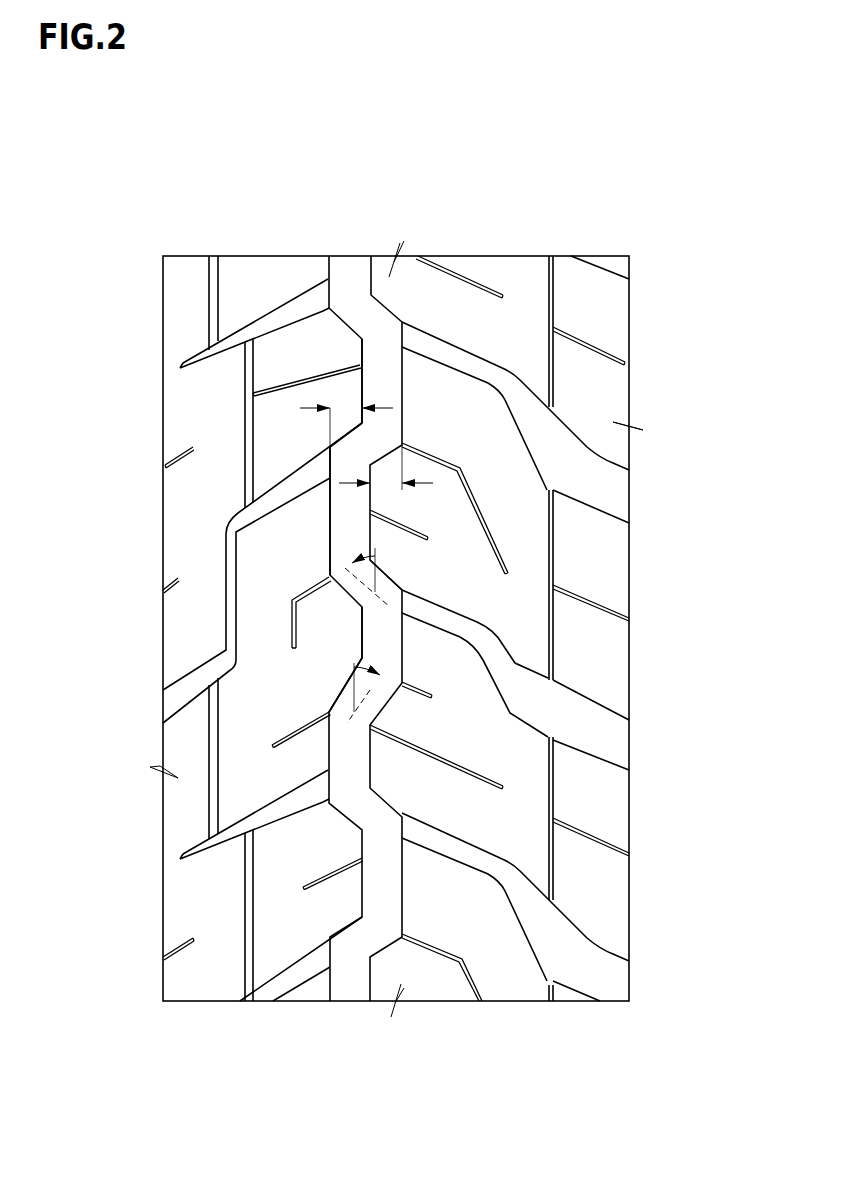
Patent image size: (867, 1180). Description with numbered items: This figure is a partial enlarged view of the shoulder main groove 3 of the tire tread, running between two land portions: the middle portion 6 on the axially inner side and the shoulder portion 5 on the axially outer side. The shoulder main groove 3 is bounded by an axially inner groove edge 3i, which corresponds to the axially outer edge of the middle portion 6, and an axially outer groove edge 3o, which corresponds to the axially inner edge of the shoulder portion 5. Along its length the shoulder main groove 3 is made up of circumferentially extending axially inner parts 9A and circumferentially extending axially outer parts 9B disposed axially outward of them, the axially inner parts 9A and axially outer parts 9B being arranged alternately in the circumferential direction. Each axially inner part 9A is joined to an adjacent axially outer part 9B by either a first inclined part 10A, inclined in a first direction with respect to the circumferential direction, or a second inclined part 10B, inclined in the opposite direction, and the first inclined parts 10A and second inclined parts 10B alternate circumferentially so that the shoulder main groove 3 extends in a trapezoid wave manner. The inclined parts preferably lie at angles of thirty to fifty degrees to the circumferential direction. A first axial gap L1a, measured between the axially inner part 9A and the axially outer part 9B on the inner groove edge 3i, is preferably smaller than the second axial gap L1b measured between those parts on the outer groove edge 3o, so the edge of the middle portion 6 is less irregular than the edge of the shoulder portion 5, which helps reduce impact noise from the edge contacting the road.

The shoulder main groove 3 is at (535, 678).
The axially inner groove edge 3i is at (360, 883).
The axially outer groove edge 3o is at (388, 862).
The shoulder portion 5 is at (522, 283).
The middle portion 6 is at (259, 283).
The axially inner part 9A is at (352, 531).
The axially outer part 9B is at (388, 372).
The first inclined part 10A is at (388, 589).
The second inclined part 10B is at (380, 700).
The first axial gap L1a is at (347, 407).
The second axial gap L1b is at (388, 485).